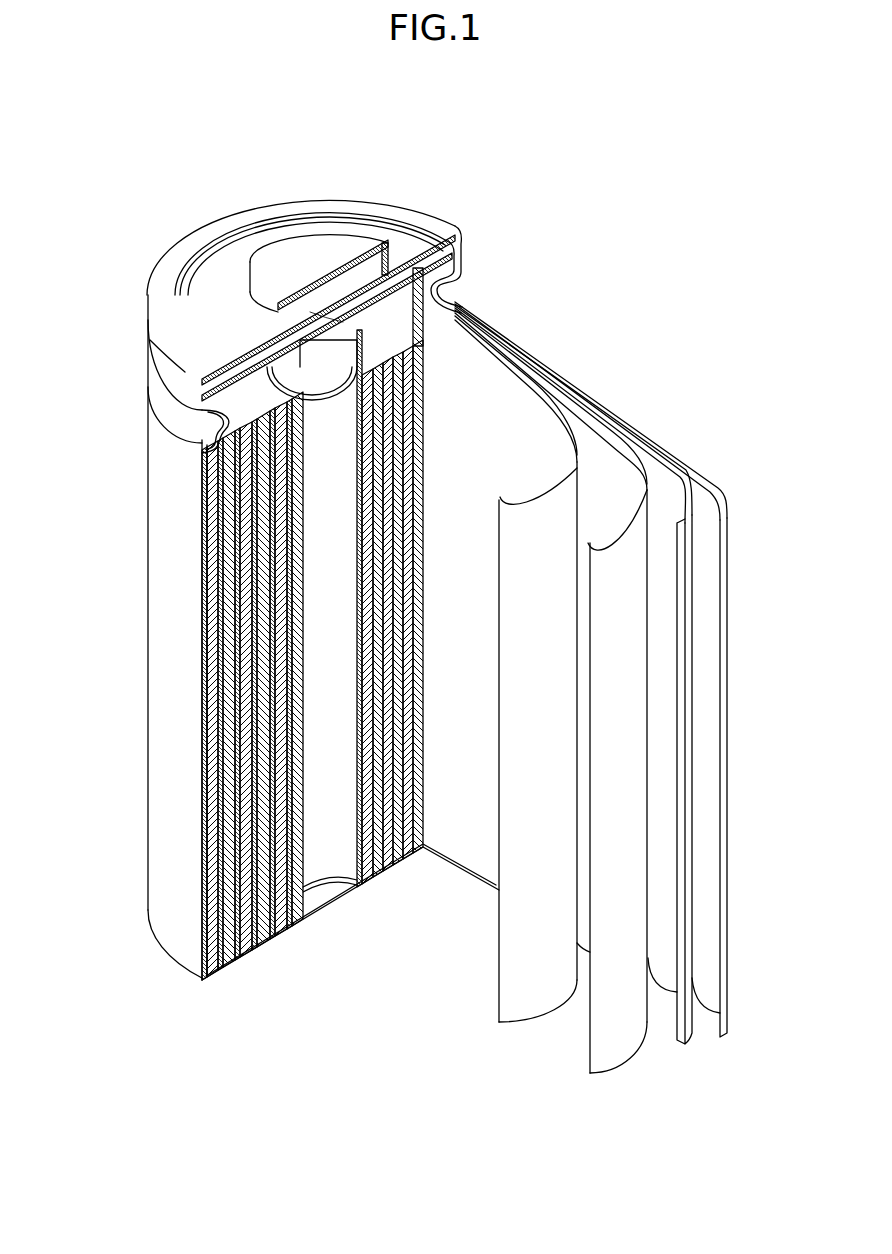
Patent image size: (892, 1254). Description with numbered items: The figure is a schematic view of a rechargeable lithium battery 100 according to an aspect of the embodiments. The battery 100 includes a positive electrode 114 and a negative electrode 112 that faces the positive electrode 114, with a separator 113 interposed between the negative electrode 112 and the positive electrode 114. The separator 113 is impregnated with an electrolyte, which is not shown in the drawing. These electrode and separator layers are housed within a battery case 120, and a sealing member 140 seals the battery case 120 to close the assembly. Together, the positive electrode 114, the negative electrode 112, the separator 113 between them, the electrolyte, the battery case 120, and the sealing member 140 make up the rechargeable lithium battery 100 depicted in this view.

The rechargeable lithium battery 100 is at (521, 176).
The negative electrode 112 is at (723, 503).
The separator 113 is at (533, 393).
The positive electrode 114 is at (613, 447).
The battery case 120 is at (165, 592).
The sealing member 140 is at (272, 260).